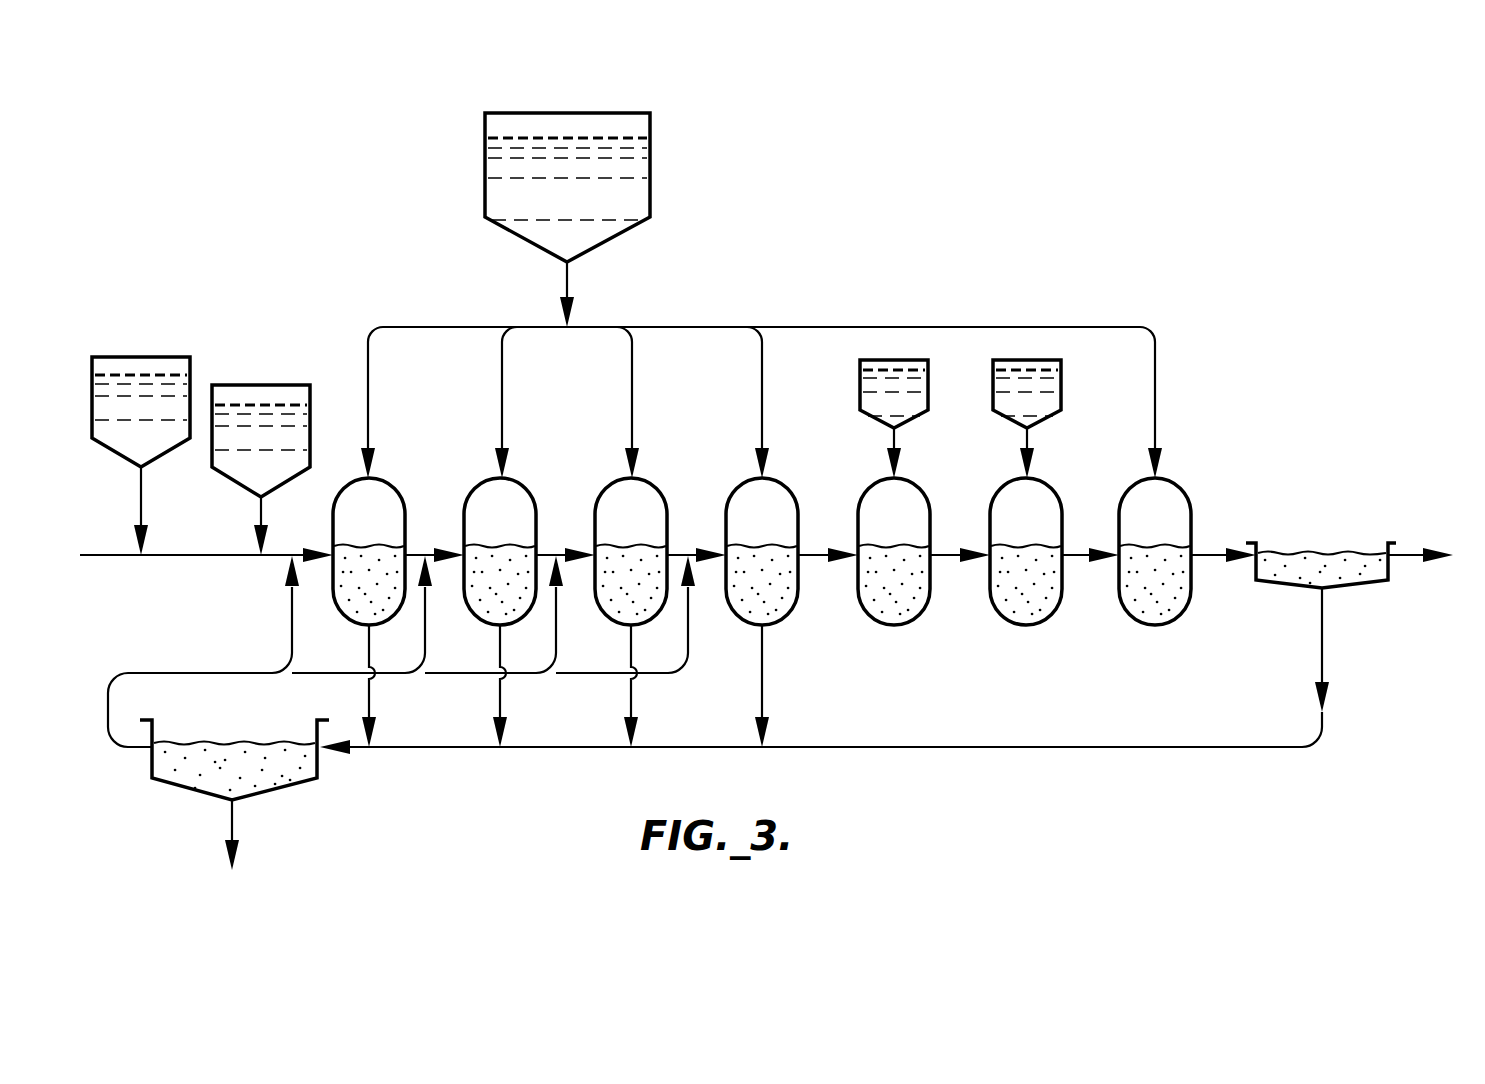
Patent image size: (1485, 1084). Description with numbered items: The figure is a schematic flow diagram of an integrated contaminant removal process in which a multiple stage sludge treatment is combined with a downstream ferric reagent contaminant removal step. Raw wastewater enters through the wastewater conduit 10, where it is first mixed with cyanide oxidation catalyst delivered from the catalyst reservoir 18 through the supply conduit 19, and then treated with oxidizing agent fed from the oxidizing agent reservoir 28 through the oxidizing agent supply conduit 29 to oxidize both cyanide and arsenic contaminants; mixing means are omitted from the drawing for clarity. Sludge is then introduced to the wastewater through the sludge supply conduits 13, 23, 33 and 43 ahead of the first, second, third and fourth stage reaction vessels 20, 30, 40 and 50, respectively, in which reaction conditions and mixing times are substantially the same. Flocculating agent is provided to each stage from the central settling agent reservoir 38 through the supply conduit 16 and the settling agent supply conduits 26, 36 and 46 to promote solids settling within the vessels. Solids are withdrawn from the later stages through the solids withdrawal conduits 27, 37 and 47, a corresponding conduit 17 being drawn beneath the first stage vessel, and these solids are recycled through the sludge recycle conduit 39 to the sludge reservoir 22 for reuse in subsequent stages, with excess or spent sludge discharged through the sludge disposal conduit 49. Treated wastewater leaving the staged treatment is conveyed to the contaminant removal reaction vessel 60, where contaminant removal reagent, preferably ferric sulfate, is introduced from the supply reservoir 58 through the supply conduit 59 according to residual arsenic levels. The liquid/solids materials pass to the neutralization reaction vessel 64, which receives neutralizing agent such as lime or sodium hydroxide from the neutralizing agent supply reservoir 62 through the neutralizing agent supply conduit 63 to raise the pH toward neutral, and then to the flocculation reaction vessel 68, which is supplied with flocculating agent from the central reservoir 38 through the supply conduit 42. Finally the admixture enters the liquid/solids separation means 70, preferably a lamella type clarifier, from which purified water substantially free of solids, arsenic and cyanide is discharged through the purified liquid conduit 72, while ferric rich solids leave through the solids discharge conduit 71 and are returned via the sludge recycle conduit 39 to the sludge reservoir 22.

The wastewater conduit 10 is at (86, 558).
The sludge supply conduit 13 is at (292, 662).
The supply conduit 16 is at (368, 398).
The outlet conduit 17 is at (369, 710).
The catalyst reservoir 18 is at (163, 357).
The supply conduit 19 is at (141, 512).
The first stage reaction vessel 20 is at (393, 492).
The sludge reservoir 22 is at (297, 787).
The sludge conduit 23 is at (425, 662).
The settling agent supply conduit 26 is at (502, 398).
The solids withdrawal conduit 27 is at (500, 710).
The oxidizing agent reservoir 28 is at (266, 385).
The oxidizing agent supply conduit 29 is at (261, 528).
The second stage reaction vessel 30 is at (524, 492).
The sludge conduit 33 is at (556, 662).
The settling agent supply conduit 36 is at (632, 398).
The solids withdrawal conduit 37 is at (631, 710).
The settling agent reservoir 38 is at (630, 116).
The sludge recycle conduit 39 is at (955, 746).
The third stage reaction vessel 40 is at (655, 492).
The supply conduit 42 is at (1155, 392).
The sludge conduit 43 is at (688, 662).
The settling agent supply conduit 46 is at (762, 398).
The solids withdrawal conduit 47 is at (762, 710).
The sludge disposal conduit 49 is at (232, 832).
The fourth stage reaction vessel 50 is at (786, 492).
The supply reservoir 58 is at (912, 358).
The supply conduit 59 is at (894, 445).
The contaminant removal reaction vessel 60 is at (918, 492).
The neutralizing agent supply reservoir 62 is at (1045, 358).
The neutralizing agent supply conduit 63 is at (1027, 445).
The neutralization reaction vessel 64 is at (1050, 492).
The flocculation reaction vessel 68 is at (1179, 490).
The liquid/solids separation means 70 is at (1345, 590).
The solids discharge conduit 71 is at (1322, 672).
The purified liquid conduit 72 is at (1414, 566).